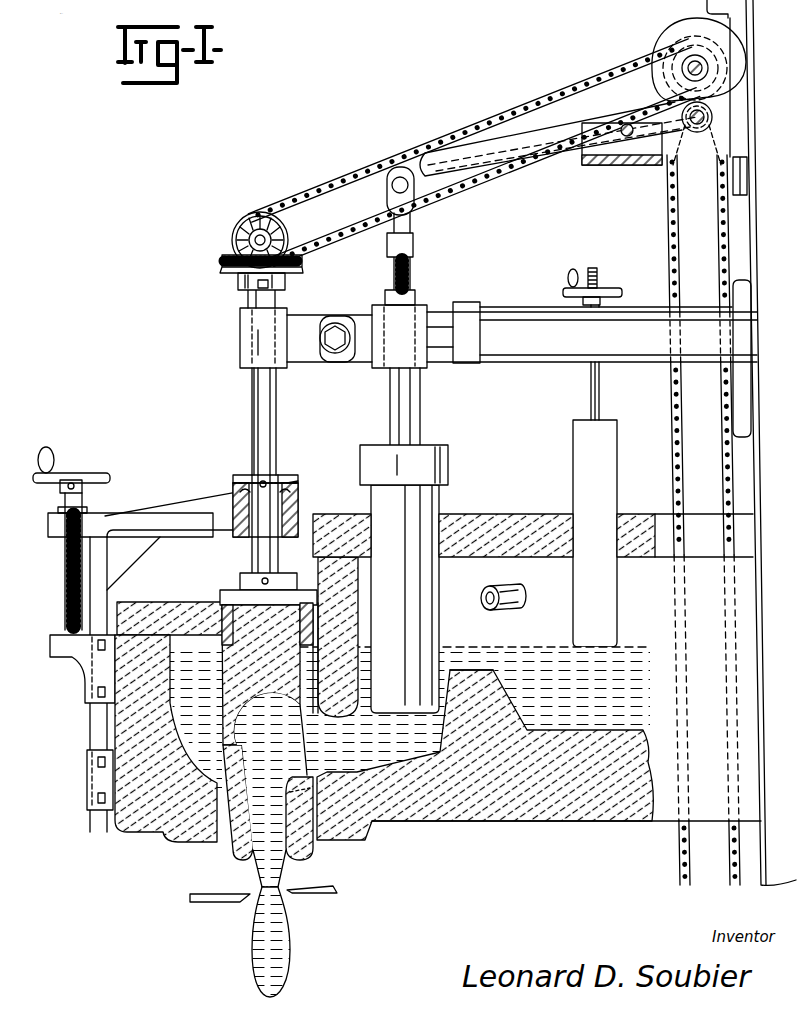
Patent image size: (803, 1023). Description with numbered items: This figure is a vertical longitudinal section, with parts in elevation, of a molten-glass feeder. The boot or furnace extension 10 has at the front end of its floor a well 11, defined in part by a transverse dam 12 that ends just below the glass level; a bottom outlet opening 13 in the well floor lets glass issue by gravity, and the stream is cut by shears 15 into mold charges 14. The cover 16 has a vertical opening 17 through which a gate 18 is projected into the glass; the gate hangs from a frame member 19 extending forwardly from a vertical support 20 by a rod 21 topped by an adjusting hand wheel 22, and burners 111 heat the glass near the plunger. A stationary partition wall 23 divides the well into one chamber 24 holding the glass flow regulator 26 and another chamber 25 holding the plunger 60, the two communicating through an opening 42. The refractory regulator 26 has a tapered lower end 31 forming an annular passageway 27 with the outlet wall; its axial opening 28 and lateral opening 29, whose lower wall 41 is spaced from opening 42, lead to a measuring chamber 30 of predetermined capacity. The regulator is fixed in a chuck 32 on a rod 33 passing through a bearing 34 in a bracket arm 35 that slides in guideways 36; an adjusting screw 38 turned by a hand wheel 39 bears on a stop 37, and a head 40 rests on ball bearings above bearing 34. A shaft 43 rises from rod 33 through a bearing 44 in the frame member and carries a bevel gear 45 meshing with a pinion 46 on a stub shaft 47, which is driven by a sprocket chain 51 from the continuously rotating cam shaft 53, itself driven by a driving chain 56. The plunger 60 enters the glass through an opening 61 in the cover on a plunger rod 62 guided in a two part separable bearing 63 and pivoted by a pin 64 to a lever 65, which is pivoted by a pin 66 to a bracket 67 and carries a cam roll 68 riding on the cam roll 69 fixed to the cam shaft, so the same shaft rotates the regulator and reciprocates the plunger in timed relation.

The boot or furnace extension 10 is at (605, 815).
The well 11 is at (395, 752).
The transverse dam 12 is at (487, 668).
The bottom outlet opening 13 is at (232, 820).
The mold charges 14 is at (282, 947).
The shears 15 is at (325, 893).
The cover 16 is at (519, 514).
The vertical opening 17 is at (620, 514).
The gate 18 is at (612, 452).
The frame member 19 is at (536, 350).
The vertical support 20 is at (755, 270).
The rod 21 is at (600, 393).
The adjusting hand wheel 22 is at (618, 286).
The stationary partition wall 23 is at (318, 568).
The chamber 24 is at (196, 718).
The chamber 25 is at (475, 712).
The glass flow regulator 26 is at (223, 742).
The annular passageway 27 is at (310, 848).
The axial opening 28 is at (269, 853).
The lateral opening 29 is at (302, 746).
The measuring chamber 30 is at (270, 790).
The lower end 31 is at (248, 868).
The chuck 32 is at (243, 590).
The rod 33 is at (251, 548).
The bearing 34 is at (299, 505).
The bracket arm 35 is at (158, 512).
The guideways 36 is at (86, 690).
The stop 37 is at (58, 655).
The adjusting screw 38 is at (64, 585).
The hand wheel 39 is at (96, 472).
The head 40 is at (292, 475).
The lower wall 41 is at (314, 775).
The opening 42 is at (336, 670).
The shaft 43 is at (280, 465).
The bearing 44 is at (241, 352).
The bevel gear 45 is at (221, 263).
The pinion 46 is at (248, 241).
The stub shaft 47 is at (238, 226).
The sprocket chain 51 is at (345, 183).
The cam shaft 53 is at (686, 73).
The driving chain 56 is at (680, 866).
The plunger 60 is at (405, 599).
The opening 61 is at (442, 520).
The plunger rod 62 is at (421, 413).
The two part separable bearing 63 is at (382, 368).
The pin 64 is at (412, 192).
The lever 65 is at (550, 143).
The pin 66 is at (628, 137).
The bracket 67 is at (608, 165).
The cam roll 68 is at (697, 133).
The cam roll 69 is at (662, 40).
The burners 111 is at (510, 592).